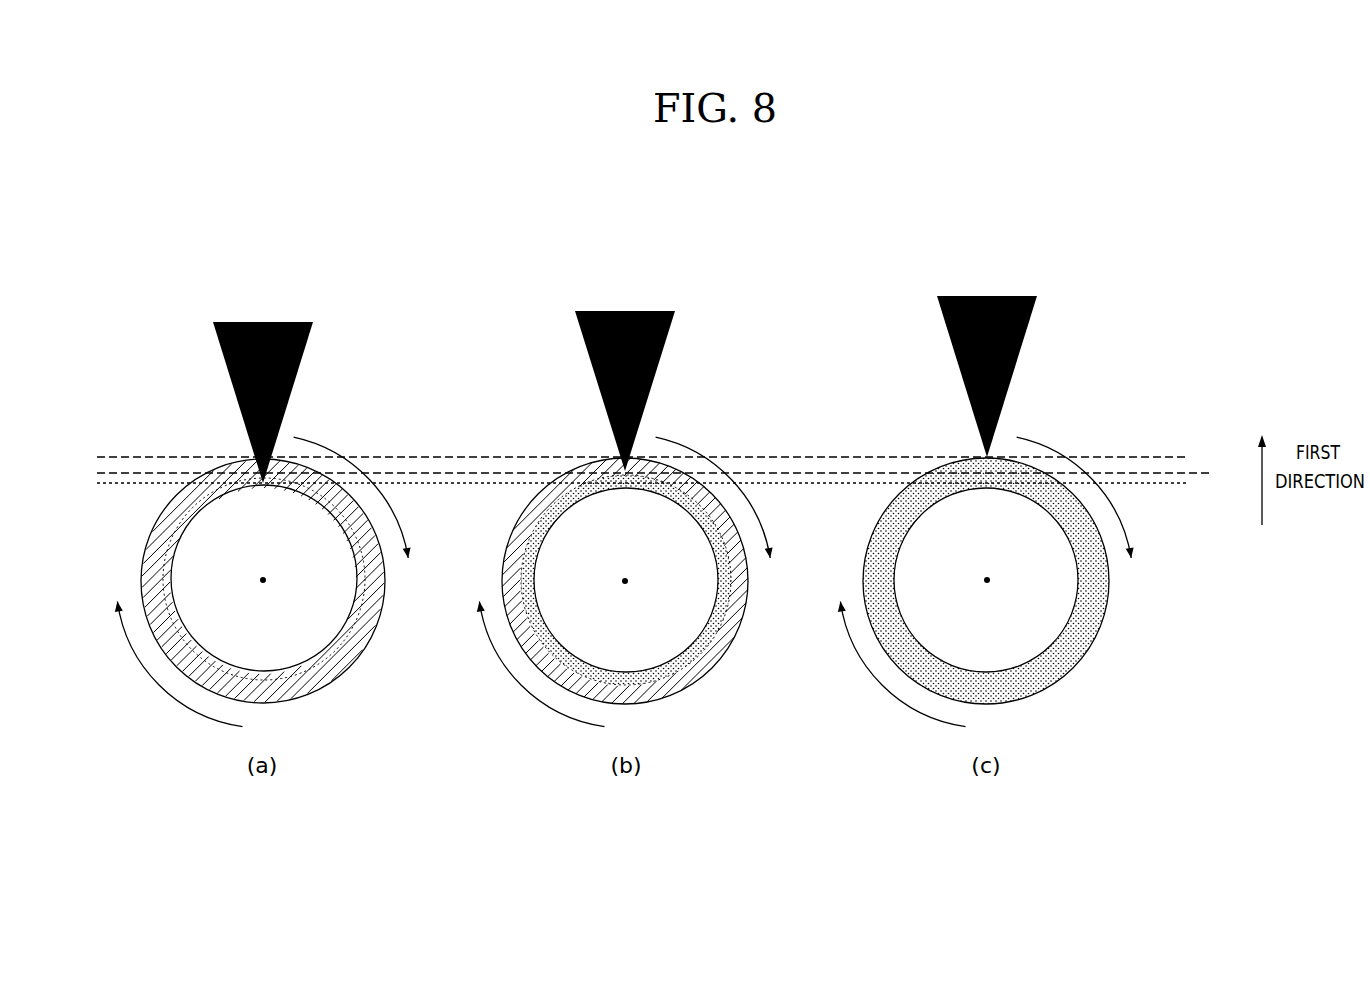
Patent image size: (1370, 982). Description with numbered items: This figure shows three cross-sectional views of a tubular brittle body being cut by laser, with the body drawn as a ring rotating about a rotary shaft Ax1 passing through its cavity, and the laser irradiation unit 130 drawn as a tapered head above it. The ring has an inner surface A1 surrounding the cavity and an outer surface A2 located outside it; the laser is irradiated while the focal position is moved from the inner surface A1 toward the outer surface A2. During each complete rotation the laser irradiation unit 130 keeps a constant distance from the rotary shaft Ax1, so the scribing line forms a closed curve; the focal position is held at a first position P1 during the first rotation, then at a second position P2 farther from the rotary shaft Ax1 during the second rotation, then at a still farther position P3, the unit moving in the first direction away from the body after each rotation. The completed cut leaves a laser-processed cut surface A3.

The laser irradiation unit 130 is at (212, 351).
The inner surface A1 is at (172, 552).
The outer surface A2 is at (156, 518).
The cut surface A3 is at (1087, 632).
The rotary shaft Ax1 is at (265, 585).
The first position P1 is at (657, 495).
The second position P2 is at (669, 474).
The third position P3 is at (657, 457).